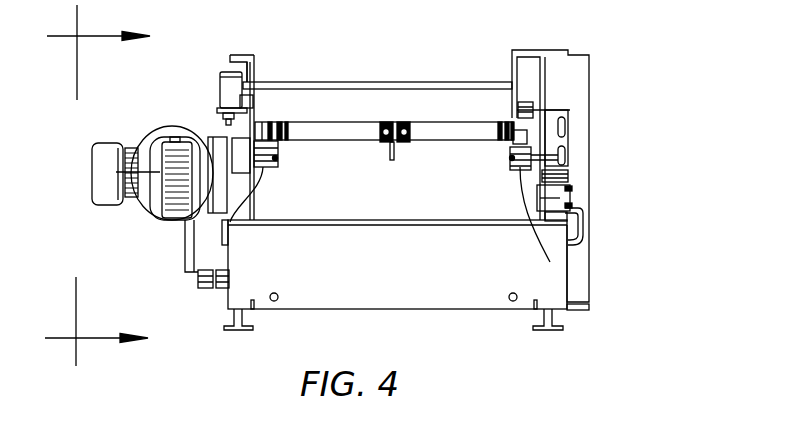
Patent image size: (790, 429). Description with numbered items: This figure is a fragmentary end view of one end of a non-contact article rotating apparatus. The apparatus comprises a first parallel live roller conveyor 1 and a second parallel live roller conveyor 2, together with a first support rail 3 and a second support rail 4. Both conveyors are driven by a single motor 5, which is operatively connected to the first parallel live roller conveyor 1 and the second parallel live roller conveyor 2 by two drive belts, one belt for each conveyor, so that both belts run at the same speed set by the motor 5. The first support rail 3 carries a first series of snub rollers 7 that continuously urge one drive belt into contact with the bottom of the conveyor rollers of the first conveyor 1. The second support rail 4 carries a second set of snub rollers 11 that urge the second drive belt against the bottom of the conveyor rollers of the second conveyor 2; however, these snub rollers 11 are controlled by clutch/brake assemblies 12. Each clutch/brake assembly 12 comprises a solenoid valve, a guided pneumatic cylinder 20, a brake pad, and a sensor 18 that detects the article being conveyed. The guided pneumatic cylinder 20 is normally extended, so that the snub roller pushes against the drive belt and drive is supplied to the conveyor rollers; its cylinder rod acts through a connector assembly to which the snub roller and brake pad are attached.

The first parallel live roller conveyor 1 is at (318, 118).
The second parallel live roller conveyor 2 is at (445, 125).
The first support rail 3 is at (97, 186).
The second support rail 4 is at (575, 58).
The motor 5 is at (148, 210).
The first series of snub rollers 7 is at (237, 215).
The second set of snub rollers 11 is at (550, 262).
The clutch/brake assembly 12 is at (568, 142).
The sensor 18 is at (220, 102).
The guided pneumatic cylinder 20 is at (556, 197).